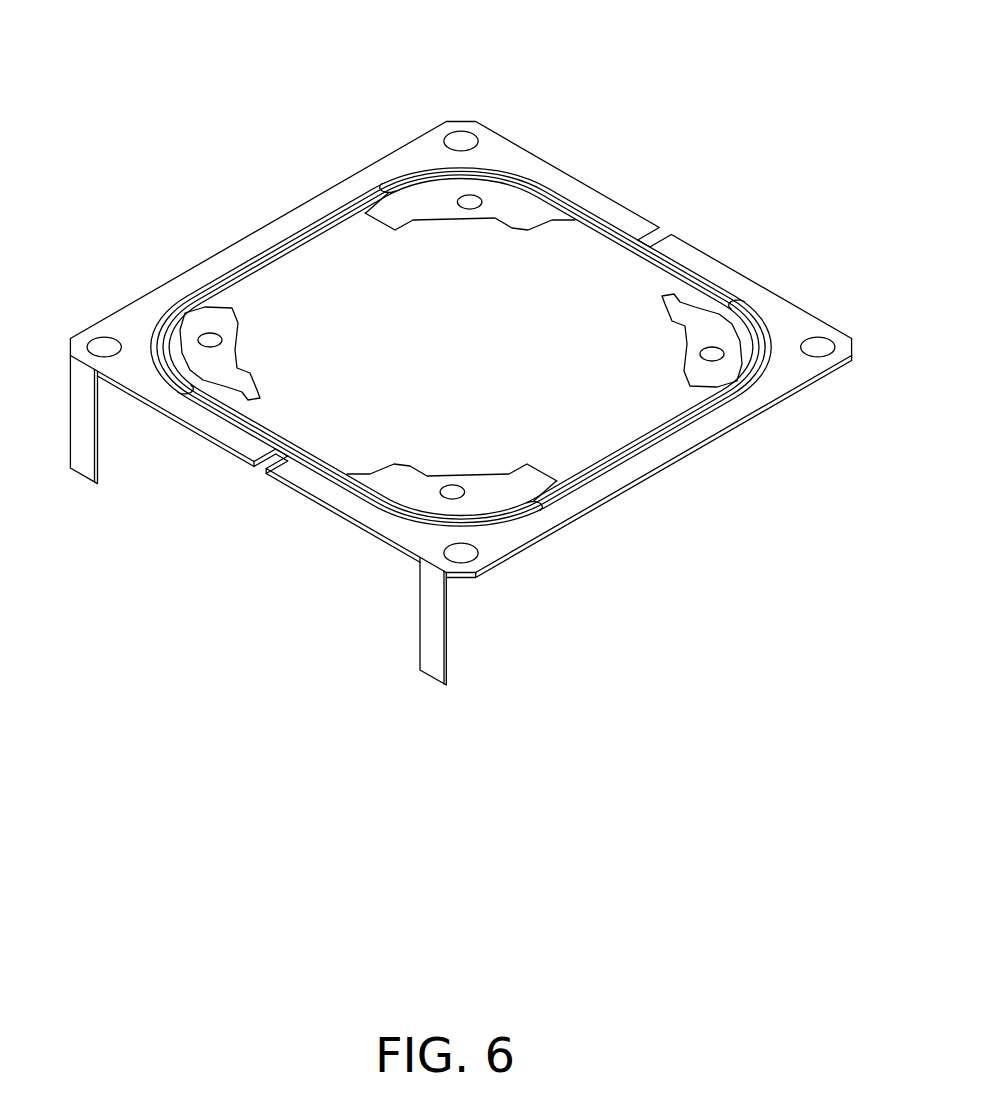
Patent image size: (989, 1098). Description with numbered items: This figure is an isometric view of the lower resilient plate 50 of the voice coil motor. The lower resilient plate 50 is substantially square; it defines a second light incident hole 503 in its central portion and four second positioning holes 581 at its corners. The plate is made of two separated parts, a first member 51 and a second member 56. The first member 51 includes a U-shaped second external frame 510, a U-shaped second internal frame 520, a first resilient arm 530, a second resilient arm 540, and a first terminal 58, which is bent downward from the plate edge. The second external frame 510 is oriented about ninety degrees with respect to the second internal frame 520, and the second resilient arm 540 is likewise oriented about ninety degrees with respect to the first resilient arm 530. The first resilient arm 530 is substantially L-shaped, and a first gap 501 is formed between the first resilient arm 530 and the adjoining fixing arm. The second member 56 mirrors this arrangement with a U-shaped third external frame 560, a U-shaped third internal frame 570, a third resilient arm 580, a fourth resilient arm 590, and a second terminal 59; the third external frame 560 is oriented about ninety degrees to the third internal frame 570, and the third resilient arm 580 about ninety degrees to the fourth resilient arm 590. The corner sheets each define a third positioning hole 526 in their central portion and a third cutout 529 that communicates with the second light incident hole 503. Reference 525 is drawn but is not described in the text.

The lower resilient plate 50 is at (181, 73).
The first member 51 is at (678, 455).
The second member 56 is at (247, 250).
The first terminal 58 is at (433, 658).
The second terminal 59 is at (85, 463).
The first gap 501 is at (685, 282).
The second light incident hole 503 is at (307, 240).
The second external frame 510 is at (307, 477).
The second internal frame 520 is at (708, 305).
The corner tab 525 is at (709, 354).
The third positioning hole 526 is at (760, 400).
The third cutout 529 is at (437, 225).
The first resilient arm 530 is at (547, 200).
The second resilient arm 540 is at (600, 470).
The third external frame 560 is at (222, 430).
The third internal frame 570 is at (210, 318).
The third resilient arm 580 is at (252, 408).
The second positioning hole 581 is at (817, 345).
The fourth resilient arm 590 is at (323, 290).